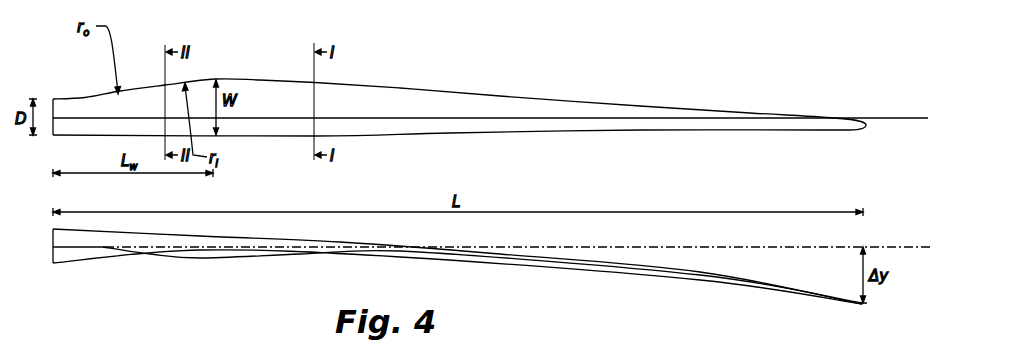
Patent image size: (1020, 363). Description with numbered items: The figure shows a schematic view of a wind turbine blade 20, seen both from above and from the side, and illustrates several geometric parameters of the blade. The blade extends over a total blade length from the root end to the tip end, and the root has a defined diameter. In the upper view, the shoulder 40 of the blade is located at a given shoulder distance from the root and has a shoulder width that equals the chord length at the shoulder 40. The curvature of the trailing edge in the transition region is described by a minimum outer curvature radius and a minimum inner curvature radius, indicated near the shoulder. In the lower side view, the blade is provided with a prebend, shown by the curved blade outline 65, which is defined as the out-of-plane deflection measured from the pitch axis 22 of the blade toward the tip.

The wind turbine blade 20 is at (340, 252).
The pitch axis 22 is at (374, 117).
The shoulder 40 is at (217, 80).
The pre-bend curve 65 is at (207, 258).